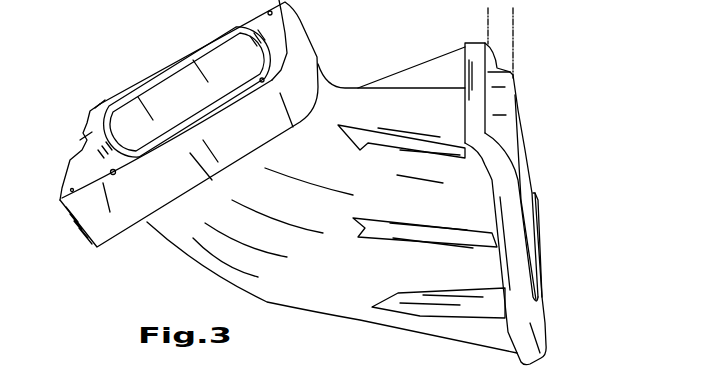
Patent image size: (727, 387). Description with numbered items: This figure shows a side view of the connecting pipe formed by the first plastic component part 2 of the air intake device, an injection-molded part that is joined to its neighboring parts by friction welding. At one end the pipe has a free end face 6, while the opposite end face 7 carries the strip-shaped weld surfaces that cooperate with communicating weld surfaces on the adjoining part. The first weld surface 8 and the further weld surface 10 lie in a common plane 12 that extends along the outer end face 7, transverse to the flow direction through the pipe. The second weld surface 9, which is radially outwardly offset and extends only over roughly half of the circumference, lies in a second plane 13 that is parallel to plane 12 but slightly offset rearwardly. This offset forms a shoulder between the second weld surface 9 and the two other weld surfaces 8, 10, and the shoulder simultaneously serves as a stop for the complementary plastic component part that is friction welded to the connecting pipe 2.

The first plastic component part 2 is at (378, 62).
The free end face 6 is at (93, 111).
The end face 7 is at (545, 278).
The first weld surface 8 is at (521, 108).
The second weld surface 9 is at (488, 67).
The weld surface 10 is at (541, 212).
The plane 12 is at (513, 20).
The plane 13 is at (488, 20).